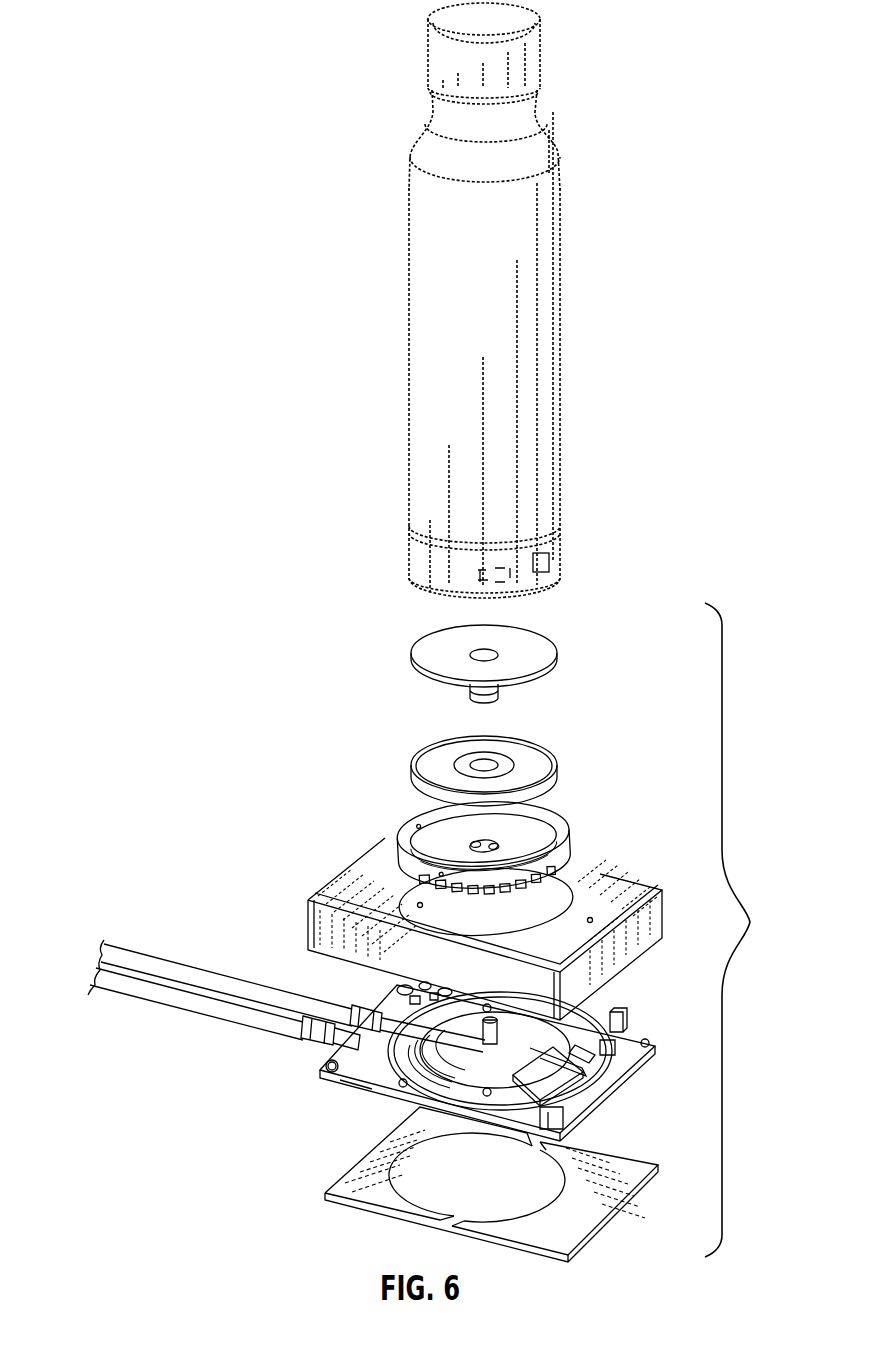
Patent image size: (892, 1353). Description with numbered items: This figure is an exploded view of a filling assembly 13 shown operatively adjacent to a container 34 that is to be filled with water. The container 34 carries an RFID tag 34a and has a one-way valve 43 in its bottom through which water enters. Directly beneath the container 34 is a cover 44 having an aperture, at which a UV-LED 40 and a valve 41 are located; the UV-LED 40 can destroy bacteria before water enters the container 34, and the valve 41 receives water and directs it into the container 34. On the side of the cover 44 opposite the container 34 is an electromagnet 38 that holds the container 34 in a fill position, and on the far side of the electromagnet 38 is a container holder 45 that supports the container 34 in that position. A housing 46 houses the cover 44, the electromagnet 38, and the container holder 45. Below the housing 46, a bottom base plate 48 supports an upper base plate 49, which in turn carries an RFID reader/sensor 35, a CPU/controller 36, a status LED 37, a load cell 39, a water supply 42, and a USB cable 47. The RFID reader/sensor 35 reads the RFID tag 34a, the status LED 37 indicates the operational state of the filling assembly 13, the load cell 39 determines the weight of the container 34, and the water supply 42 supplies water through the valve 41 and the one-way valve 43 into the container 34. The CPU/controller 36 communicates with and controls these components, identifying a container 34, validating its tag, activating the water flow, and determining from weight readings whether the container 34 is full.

The filling assembly 13 is at (435, 932).
The container 34 is at (425, 255).
The RFID tag 34a is at (550, 562).
The RFID reader/sensor 35 is at (478, 1061).
The CPU/controller 36 is at (622, 1013).
The status LED 37 is at (328, 1068).
The electromagnet 38 is at (555, 756).
The load cell 39 is at (608, 1072).
The UV-LED 40 is at (430, 709).
The valve 41 is at (470, 692).
The water supply 42 is at (133, 962).
The one-way valve 43 is at (478, 578).
The cover 44 is at (540, 655).
The container holder 45 is at (410, 816).
The housing 46 is at (388, 850).
The USB cable 47 is at (133, 985).
The bottom base plate 48 is at (575, 1225).
The upper base plate 49 is at (370, 1088).